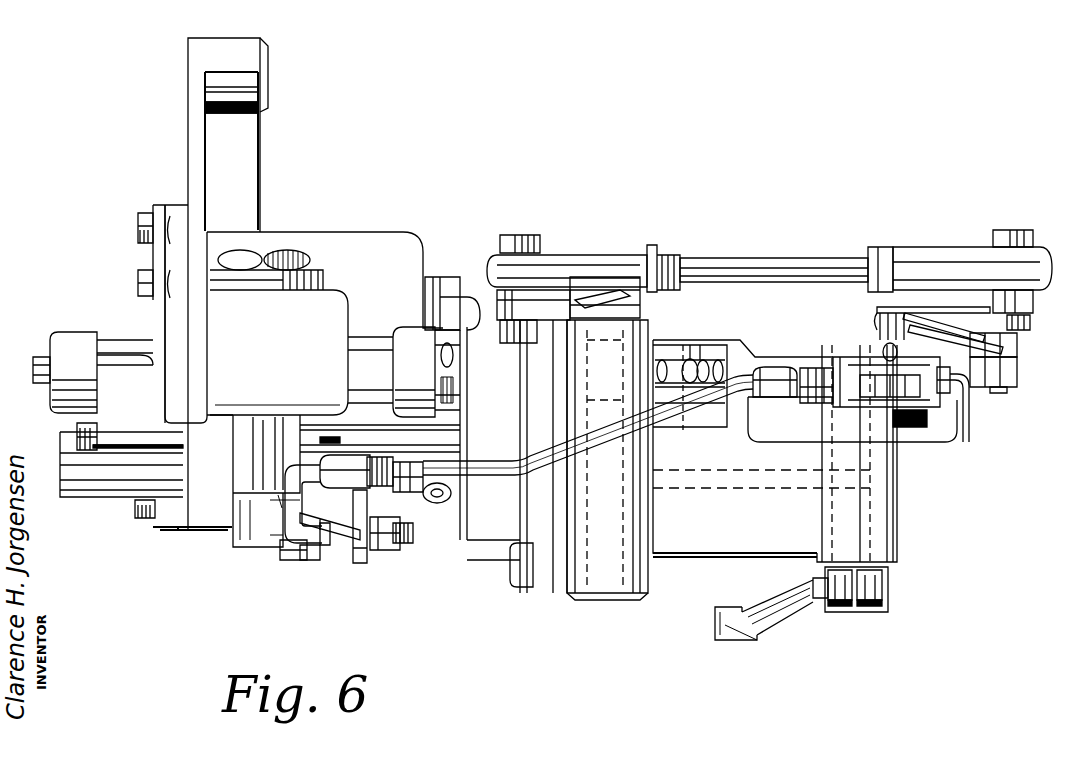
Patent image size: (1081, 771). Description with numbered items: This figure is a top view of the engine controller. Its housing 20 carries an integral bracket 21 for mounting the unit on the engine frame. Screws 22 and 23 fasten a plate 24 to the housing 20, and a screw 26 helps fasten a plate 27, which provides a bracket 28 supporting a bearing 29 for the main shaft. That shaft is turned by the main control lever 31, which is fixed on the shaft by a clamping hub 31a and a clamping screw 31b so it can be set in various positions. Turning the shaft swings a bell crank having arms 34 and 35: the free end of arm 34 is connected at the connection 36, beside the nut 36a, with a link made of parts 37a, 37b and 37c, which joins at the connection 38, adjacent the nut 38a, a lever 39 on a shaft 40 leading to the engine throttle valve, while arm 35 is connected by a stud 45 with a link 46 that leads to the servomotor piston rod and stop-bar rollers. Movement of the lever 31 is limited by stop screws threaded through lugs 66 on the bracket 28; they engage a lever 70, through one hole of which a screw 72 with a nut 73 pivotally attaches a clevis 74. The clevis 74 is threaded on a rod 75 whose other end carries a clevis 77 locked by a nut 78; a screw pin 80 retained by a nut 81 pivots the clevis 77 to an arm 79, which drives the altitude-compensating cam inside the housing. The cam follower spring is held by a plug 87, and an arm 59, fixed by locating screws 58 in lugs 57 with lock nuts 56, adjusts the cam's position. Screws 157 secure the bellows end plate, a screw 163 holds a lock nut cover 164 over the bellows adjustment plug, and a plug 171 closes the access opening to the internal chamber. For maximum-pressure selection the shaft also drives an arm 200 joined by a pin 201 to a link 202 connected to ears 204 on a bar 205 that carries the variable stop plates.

The housing 20 is at (338, 232).
The bracket 21 is at (268, 75).
The screw 22 is at (77, 440).
The screw 23 is at (138, 227).
The plate 24 is at (170, 205).
The screw 26 is at (535, 593).
The plate 27 is at (558, 593).
The bracket 28 is at (708, 557).
The bearing 29 is at (897, 521).
The main control lever 31 is at (792, 622).
The clamping hub 31a is at (875, 606).
The clamping screw 31b is at (816, 600).
The arm 34 is at (1033, 297).
The arm 35 is at (1017, 345).
The connection 36 is at (1018, 230).
The nut 36a is at (1030, 323).
The link part 37a is at (938, 247).
The link part 37b is at (764, 258).
The link part 37c is at (580, 255).
The connection 38 is at (528, 235).
The nut 38a is at (510, 343).
The lever 39 is at (545, 320).
The shaft 40 is at (607, 277).
The stud 45 is at (1000, 393).
The link 46 is at (1017, 369).
The lock nut 56 is at (388, 550).
The lug 57 is at (296, 560).
The locating screw 58 is at (312, 560).
The arm 59 is at (330, 540).
The lug 66 is at (766, 367).
The lever 70 is at (950, 390).
The screw 72 is at (955, 333).
The nut 73 is at (957, 417).
The clevis 74 is at (858, 375).
The rod 75 is at (652, 432).
The clevis 77 is at (410, 492).
The nut 78 is at (445, 500).
The arm 79 is at (390, 466).
The screw pin 80 is at (366, 425).
The nut 81 is at (322, 500).
The plug 87 is at (456, 363).
The screw 157 is at (455, 277).
The screw 163 is at (33, 370).
The lock nut cover 164 is at (85, 332).
The plug 171 is at (278, 252).
The arm 200 is at (812, 368).
The pin 201 is at (712, 360).
The link 202 is at (700, 360).
The ears 204 is at (700, 345).
The bar 205 is at (668, 345).